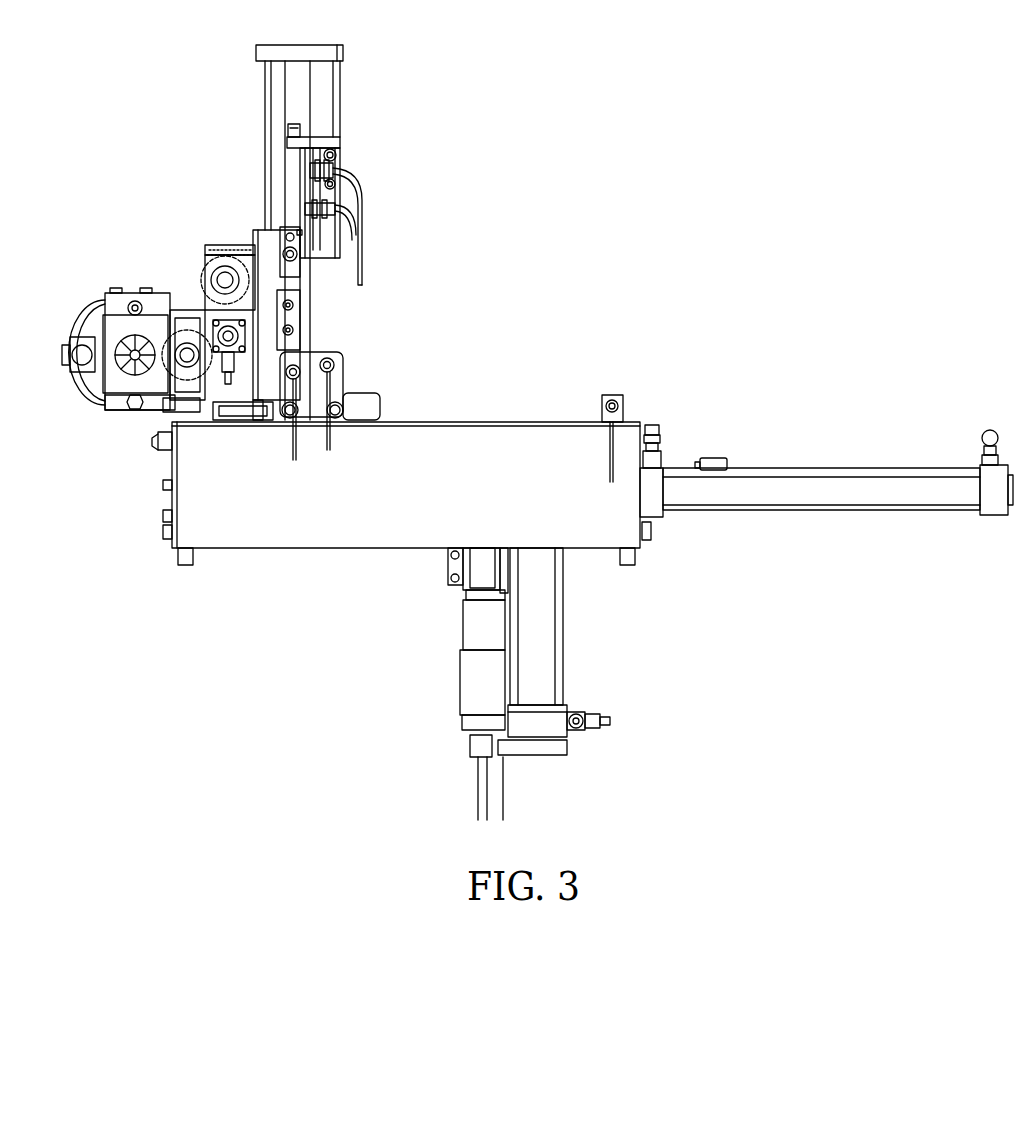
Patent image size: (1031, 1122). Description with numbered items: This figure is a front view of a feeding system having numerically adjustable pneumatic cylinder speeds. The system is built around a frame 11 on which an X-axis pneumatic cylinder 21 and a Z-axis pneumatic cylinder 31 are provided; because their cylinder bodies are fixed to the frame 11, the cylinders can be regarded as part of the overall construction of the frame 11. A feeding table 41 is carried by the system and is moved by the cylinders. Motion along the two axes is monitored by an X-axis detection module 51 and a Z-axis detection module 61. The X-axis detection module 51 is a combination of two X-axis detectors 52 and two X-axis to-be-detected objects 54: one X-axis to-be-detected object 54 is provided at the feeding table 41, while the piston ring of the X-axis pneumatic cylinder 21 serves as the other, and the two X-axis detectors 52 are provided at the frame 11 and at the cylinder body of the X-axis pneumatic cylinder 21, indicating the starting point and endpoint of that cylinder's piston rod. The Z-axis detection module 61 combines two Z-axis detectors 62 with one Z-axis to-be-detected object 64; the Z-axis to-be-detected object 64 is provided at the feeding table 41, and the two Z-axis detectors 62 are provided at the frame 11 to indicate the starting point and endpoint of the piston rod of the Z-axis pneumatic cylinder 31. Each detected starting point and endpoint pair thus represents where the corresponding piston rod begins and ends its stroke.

The frame 11 is at (365, 550).
The X-axis pneumatic cylinder 21 is at (925, 468).
The Z-axis pneumatic cylinder 31 is at (590, 628).
The feeding table 41 is at (133, 264).
The X-axis detection module 51 is at (787, 255).
The X-axis detector 52 is at (612, 393).
The X-axis to-be-detected object 54 is at (385, 405).
The Z-axis detection module 61 is at (470, 100).
The Z-axis detector 62 is at (330, 163).
The Z-axis to-be-detected object 64 is at (300, 268).